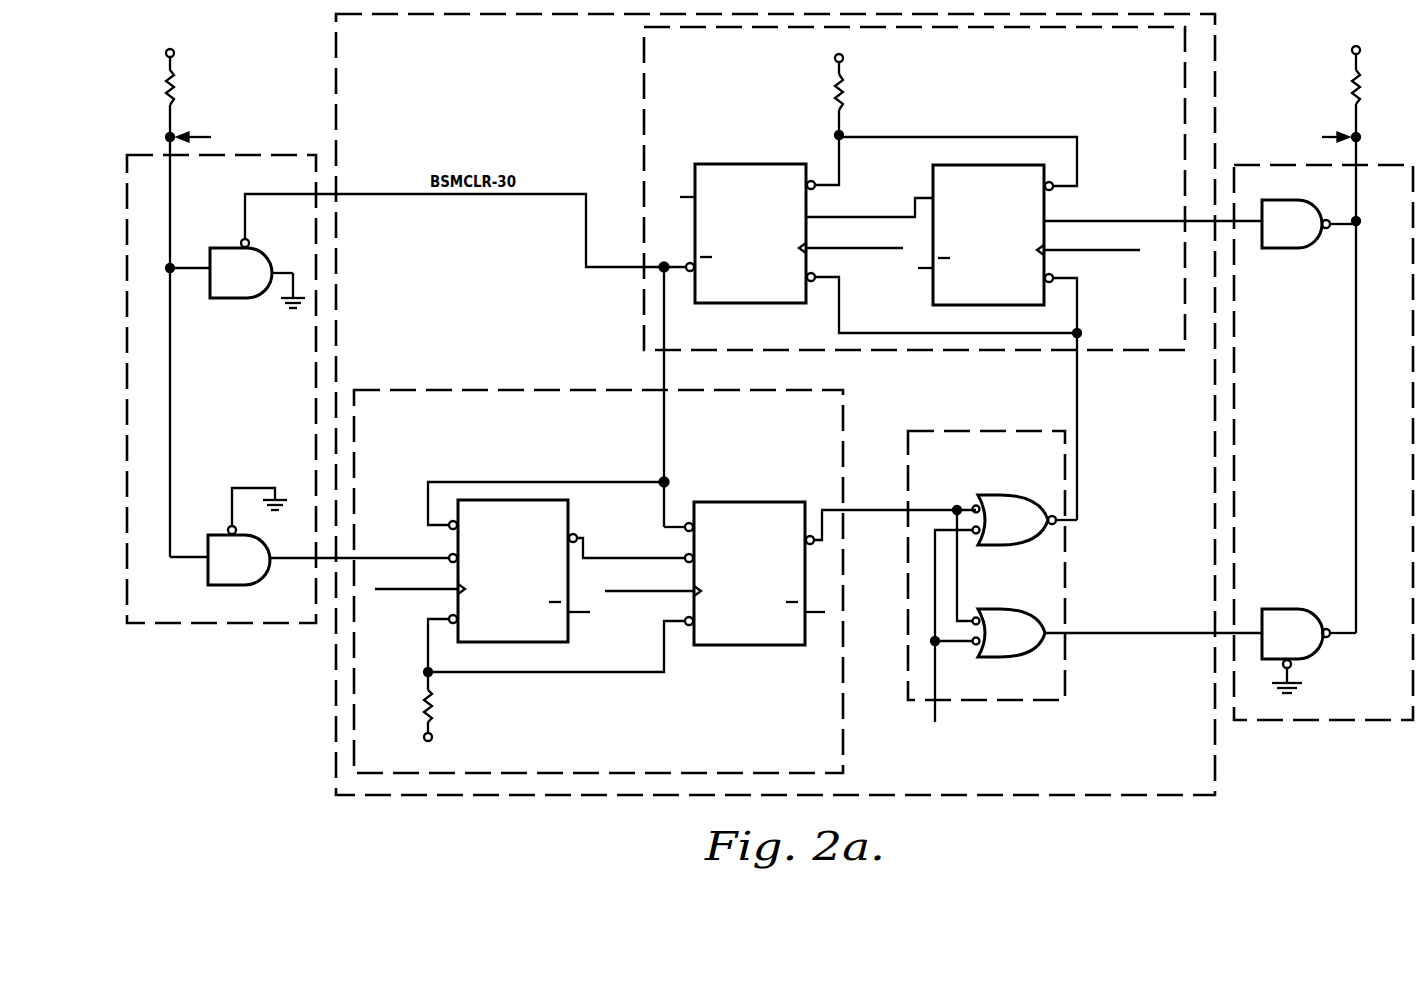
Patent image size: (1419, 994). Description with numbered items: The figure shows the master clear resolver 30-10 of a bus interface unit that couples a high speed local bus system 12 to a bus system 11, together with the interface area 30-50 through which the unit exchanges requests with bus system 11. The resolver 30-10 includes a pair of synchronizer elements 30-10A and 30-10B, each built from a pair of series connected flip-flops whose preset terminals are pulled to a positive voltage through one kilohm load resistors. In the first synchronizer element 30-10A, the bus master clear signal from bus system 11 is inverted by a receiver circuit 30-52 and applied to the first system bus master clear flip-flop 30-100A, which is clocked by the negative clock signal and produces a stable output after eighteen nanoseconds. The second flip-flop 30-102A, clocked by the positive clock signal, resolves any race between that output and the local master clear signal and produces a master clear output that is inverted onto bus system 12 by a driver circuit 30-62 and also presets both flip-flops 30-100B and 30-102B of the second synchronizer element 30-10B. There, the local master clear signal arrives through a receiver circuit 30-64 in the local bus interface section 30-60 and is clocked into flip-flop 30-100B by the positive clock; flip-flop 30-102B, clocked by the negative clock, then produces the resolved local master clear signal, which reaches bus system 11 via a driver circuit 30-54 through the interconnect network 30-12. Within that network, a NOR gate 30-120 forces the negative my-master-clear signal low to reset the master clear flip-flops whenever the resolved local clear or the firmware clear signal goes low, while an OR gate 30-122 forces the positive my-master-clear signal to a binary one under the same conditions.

The bus system 11 is at (1358, 124).
The high speed local bus system 12 is at (168, 125).
The master clear resolver 30-10 is at (477, 88).
The synchronizer element 30-10A is at (743, 66).
The synchronizer element 30-10B is at (627, 419).
The interconnect network 30-12 is at (1007, 430).
The interface area 30-50 is at (1327, 394).
The receiver circuit 30-52 is at (1298, 250).
The driver circuit 30-54 is at (1293, 608).
The XCLEAR input buffer section 30-60 is at (240, 407).
The driver circuit 30-62 is at (246, 300).
The receiver circuit 30-64 is at (216, 534).
The first system bus 11 master clear flip-flop 30-100A is at (1000, 164).
The first system bus 12 master clear flip-flop 30-100B is at (571, 474).
The second system bus 11 master clear flip-flop 30-102A is at (740, 163).
The second bus system 12 master clear flip-flop 30-102B is at (735, 502).
The NOR gate 30-120 is at (1007, 547).
The OR gate 30-122 is at (1004, 658).